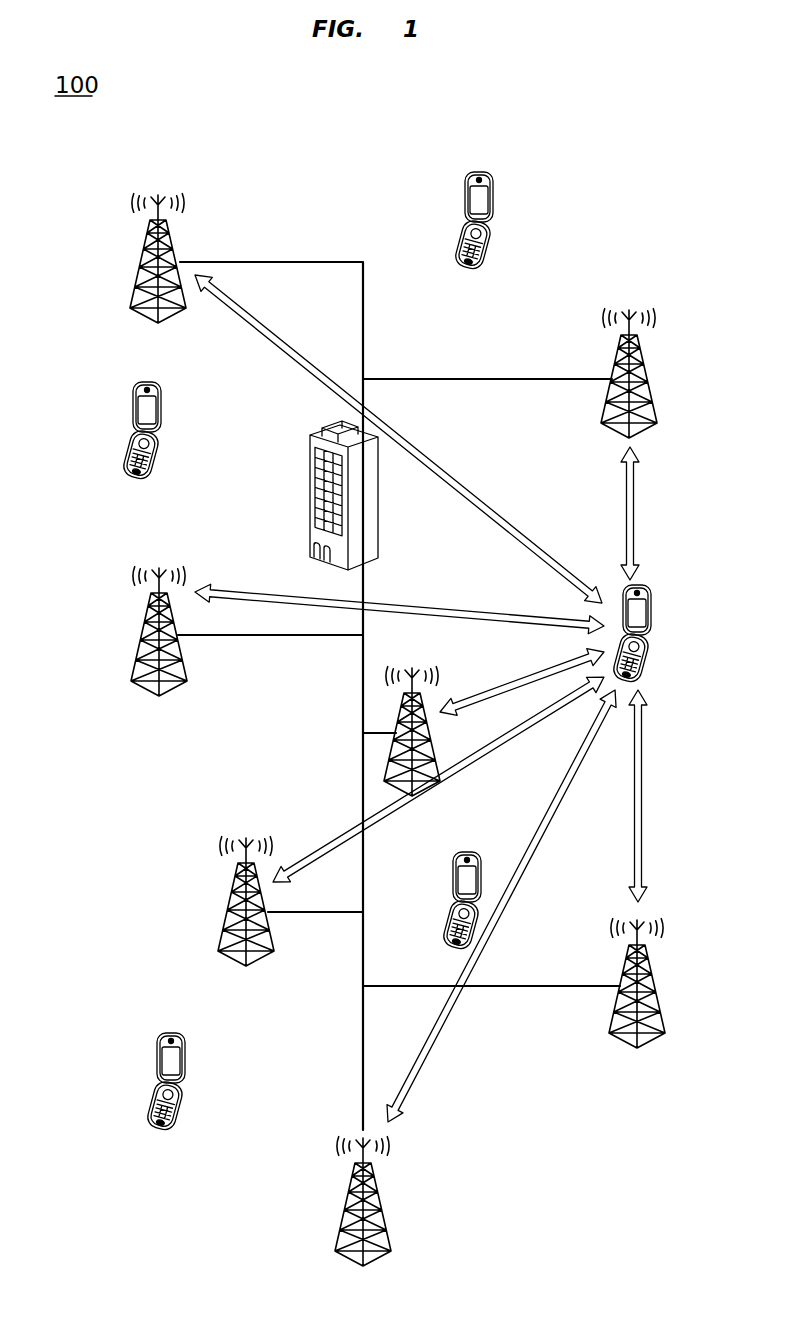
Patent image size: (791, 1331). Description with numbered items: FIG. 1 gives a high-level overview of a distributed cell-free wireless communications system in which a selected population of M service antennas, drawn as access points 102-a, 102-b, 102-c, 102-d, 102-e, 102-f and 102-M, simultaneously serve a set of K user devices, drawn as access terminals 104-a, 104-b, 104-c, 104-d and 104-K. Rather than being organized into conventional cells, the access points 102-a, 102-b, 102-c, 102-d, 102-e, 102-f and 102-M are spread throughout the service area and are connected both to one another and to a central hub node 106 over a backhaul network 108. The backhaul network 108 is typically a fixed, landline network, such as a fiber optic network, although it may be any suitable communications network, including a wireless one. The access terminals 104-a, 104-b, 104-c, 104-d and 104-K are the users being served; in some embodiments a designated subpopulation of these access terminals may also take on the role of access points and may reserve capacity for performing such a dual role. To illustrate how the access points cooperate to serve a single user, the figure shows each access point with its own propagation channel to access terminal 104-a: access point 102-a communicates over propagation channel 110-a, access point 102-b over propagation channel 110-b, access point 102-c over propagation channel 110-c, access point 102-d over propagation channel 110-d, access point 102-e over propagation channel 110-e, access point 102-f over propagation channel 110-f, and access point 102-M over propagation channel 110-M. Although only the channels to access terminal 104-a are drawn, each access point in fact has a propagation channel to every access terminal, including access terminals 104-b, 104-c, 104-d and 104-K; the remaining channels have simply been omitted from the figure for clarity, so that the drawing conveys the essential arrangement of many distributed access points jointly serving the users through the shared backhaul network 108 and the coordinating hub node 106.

The access point 102-a is at (604, 416).
The access point 102-b is at (130, 304).
The access point 102-c is at (132, 674).
The access point 102-d is at (386, 774).
The access point 102-e is at (220, 944).
The access point 102-f is at (334, 1246).
The access point 102-M is at (614, 1026).
The access terminal 104-a is at (648, 586).
The access terminal 104-b is at (158, 382).
The access terminal 104-c is at (490, 173).
The access terminal 104-d is at (468, 852).
The access terminal 104-K is at (178, 1034).
The hub node 106 is at (380, 527).
The backhaul network 108 is at (352, 262).
The propagation channel 110-a is at (640, 486).
The propagation channel 110-b is at (530, 538).
The propagation channel 110-c is at (456, 608).
The propagation channel 110-d is at (536, 668).
The propagation channel 110-e is at (470, 774).
The propagation channel 110-f is at (543, 833).
The propagation channel 110-M is at (646, 766).